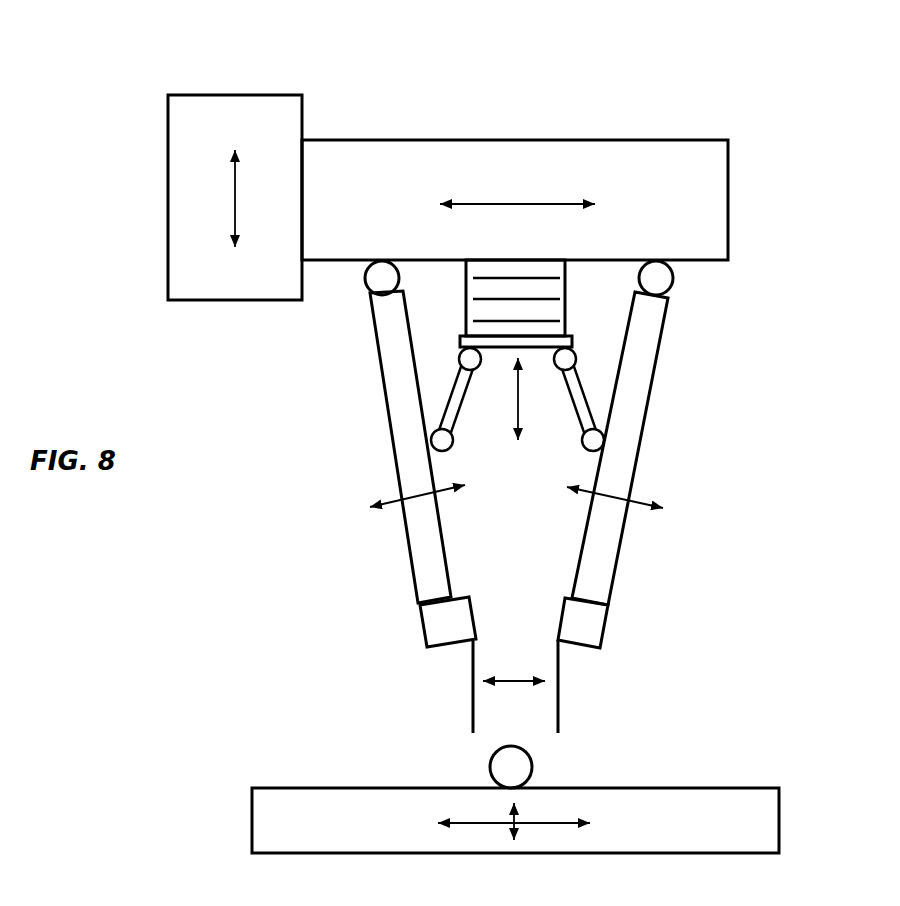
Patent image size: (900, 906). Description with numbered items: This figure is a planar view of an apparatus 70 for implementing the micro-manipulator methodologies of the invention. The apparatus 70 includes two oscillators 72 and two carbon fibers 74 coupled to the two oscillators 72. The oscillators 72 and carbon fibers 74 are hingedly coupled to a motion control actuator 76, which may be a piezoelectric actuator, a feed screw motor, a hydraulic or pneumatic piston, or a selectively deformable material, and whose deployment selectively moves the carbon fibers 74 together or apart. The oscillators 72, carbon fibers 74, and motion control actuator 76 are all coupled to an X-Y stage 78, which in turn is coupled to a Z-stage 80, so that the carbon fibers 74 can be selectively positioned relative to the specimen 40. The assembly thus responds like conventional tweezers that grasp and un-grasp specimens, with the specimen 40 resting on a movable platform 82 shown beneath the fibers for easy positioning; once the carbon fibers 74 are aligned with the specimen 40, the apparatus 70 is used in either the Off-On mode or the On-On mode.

The specimen 40 is at (528, 750).
The apparatus 70 is at (762, 400).
The oscillator 72 is at (603, 627).
The carbon fiber 74 is at (567, 692).
The motion control actuator 76 is at (567, 288).
The X-Y stage 78 is at (685, 141).
The Z-stage 80 is at (268, 93).
The table / stage 82 is at (735, 788).